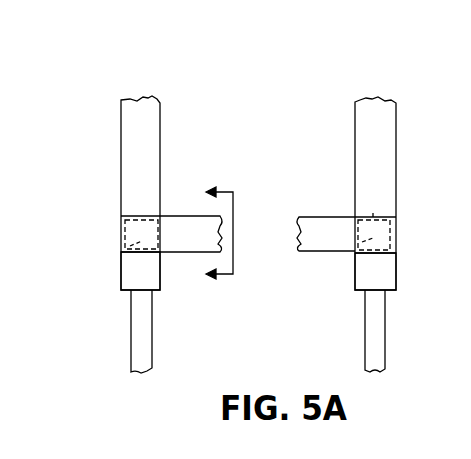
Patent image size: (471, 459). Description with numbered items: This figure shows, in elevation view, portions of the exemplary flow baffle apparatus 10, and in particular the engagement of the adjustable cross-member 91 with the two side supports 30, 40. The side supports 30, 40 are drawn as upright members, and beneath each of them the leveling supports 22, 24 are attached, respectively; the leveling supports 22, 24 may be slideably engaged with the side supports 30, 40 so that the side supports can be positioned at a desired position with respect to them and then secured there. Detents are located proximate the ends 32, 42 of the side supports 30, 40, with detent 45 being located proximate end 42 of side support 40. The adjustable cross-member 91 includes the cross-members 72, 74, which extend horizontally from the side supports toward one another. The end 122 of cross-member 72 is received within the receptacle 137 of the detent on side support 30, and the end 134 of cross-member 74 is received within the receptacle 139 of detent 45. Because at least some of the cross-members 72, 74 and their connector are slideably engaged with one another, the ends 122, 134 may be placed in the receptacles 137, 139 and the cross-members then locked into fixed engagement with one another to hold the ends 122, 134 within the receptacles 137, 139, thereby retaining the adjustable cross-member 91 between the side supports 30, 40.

The flow baffle apparatus 10 is at (267, 89).
The side support 30 is at (121, 145).
The side support 40 is at (390, 124).
The cross-member 72 is at (171, 214).
The cross-member 74 is at (326, 215).
The detent 45 is at (373, 213).
The end of cross-member 122 is at (123, 229).
The end of cross-member 134 is at (392, 213).
The receptacle 137 is at (120, 258).
The receptacle 139 is at (357, 247).
The end of side support 32 is at (162, 292).
The end of side support 42 is at (397, 291).
The leveling support 22 is at (147, 348).
The leveling support 24 is at (378, 352).
The adjustable cross-member 91 is at (297, 238).